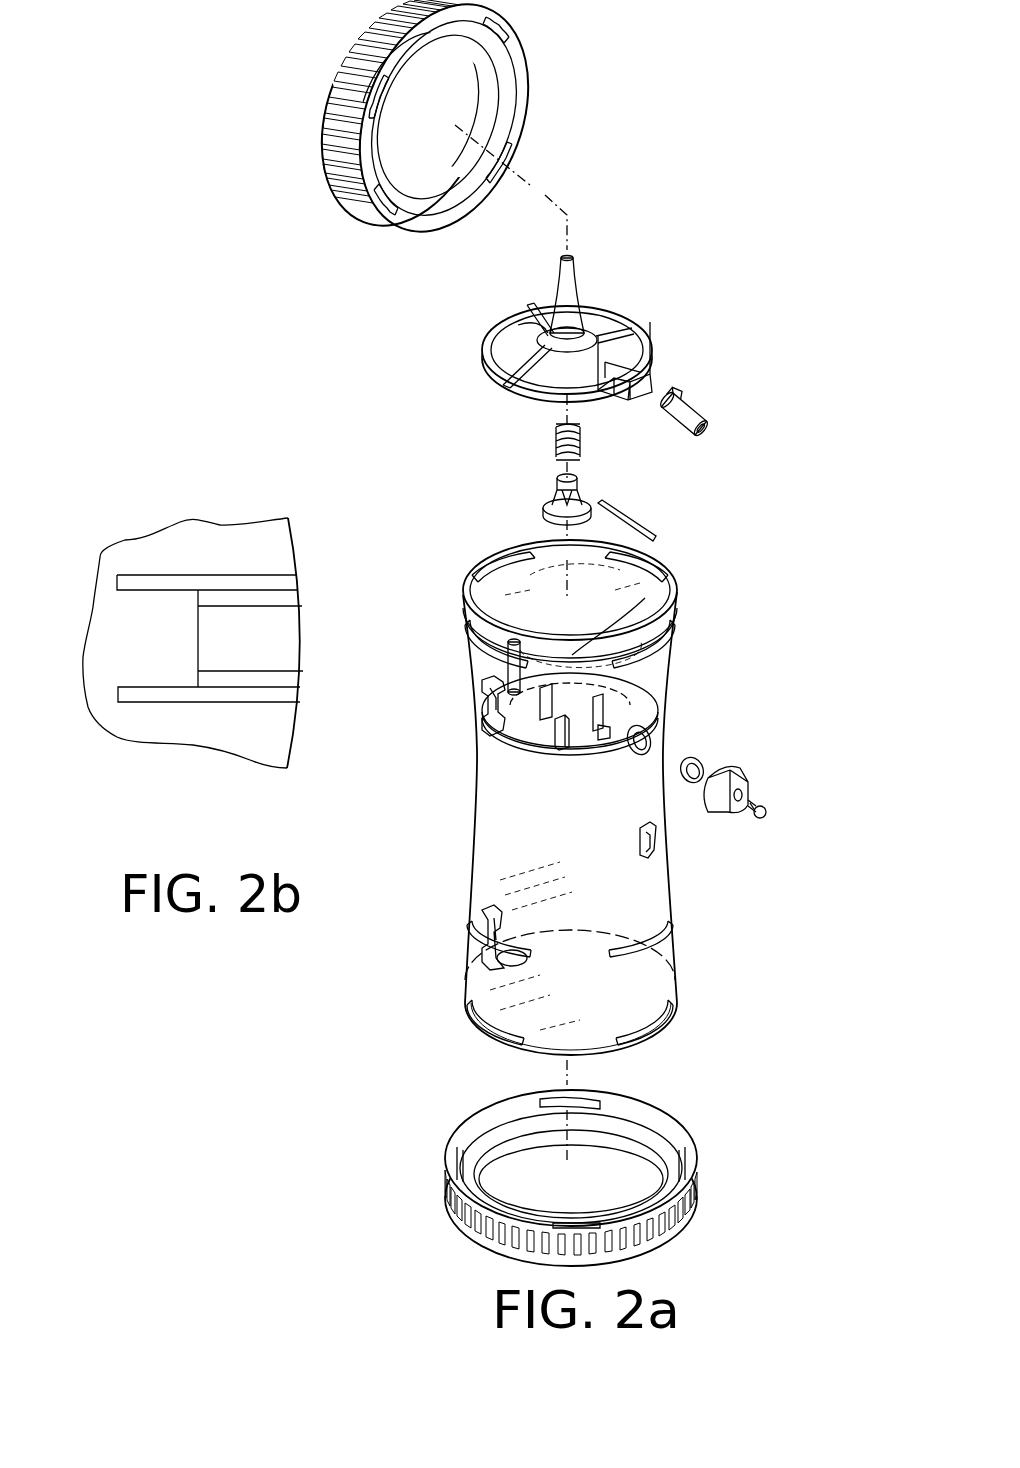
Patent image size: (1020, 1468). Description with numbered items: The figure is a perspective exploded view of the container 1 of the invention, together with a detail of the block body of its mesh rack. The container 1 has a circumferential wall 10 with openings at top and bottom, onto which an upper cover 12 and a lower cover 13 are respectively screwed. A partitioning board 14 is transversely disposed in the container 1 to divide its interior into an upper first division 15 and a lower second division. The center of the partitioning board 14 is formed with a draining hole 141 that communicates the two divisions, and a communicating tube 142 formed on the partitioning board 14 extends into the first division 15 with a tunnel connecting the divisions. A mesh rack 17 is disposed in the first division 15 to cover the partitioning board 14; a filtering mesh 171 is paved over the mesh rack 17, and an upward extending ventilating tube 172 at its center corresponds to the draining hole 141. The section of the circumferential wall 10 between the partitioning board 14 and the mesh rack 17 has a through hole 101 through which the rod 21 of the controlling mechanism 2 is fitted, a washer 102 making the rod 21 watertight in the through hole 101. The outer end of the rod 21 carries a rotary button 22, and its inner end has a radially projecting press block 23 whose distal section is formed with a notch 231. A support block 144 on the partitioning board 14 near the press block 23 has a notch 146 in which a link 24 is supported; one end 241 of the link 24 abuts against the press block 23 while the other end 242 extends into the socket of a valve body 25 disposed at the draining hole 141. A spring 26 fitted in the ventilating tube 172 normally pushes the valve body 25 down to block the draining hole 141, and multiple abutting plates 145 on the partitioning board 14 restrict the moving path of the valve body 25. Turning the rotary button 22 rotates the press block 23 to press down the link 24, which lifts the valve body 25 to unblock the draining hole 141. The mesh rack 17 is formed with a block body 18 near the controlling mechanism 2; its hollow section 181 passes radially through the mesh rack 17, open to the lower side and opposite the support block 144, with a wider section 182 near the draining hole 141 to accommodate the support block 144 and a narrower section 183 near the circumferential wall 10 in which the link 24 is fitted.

In FIG. 2A, the container 1 is at (582, 797).
In FIG. 2A, the controlling mechanism 2 is at (716, 427).
In FIG. 2A, the circumferential wall 10 is at (565, 822).
In FIG. 2A, the through hole 101 is at (648, 750).
In FIG. 2A, the washer 102 is at (700, 758).
In FIG. 2A, the upper cover 12 is at (340, 86).
In FIG. 2A, the lower cover 13 is at (685, 1262).
In FIG. 2A, the partitioning board 14 is at (620, 603).
In FIG. 2A, the draining hole 141 is at (548, 757).
In FIG. 2A, the communicating tube 142 is at (505, 630).
In FIG. 2A, the support block 144 is at (665, 712).
In FIG. 2A, the abutting plates 145 is at (484, 712).
In FIG. 2A, the notch 146 is at (605, 683).
In FIG. 2A, the first division 15 is at (665, 605).
In FIG. 2A, the mesh rack 17 is at (571, 312).
In FIG. 2B, the mesh rack 17 is at (212, 601).
In FIG. 2A, the filtering mesh 171 is at (495, 360).
In FIG. 2A, the ventilating tube 172 is at (567, 300).
In FIG. 2A, the block body 18 is at (640, 343).
In FIG. 2B, the block body 18 is at (210, 573).
In FIG. 2A, the hollow section 181 is at (645, 390).
In FIG. 2B, the wider section 182 is at (153, 632).
In FIG. 2B, the narrower section 183 is at (227, 671).
In FIG. 2A, the rod 21 is at (683, 432).
In FIG. 2A, the rotary button 22 is at (745, 790).
In FIG. 2A, the press block 23 is at (723, 383).
In FIG. 2A, the notch 231 is at (683, 394).
In FIG. 2A, the link 24 is at (696, 494).
In FIG. 2A, the one end of the link 241 is at (660, 540).
In FIG. 2A, the other end of the link 242 is at (612, 502).
In FIG. 2A, the valve body 25 is at (552, 497).
In FIG. 2A, the spring 26 is at (553, 445).